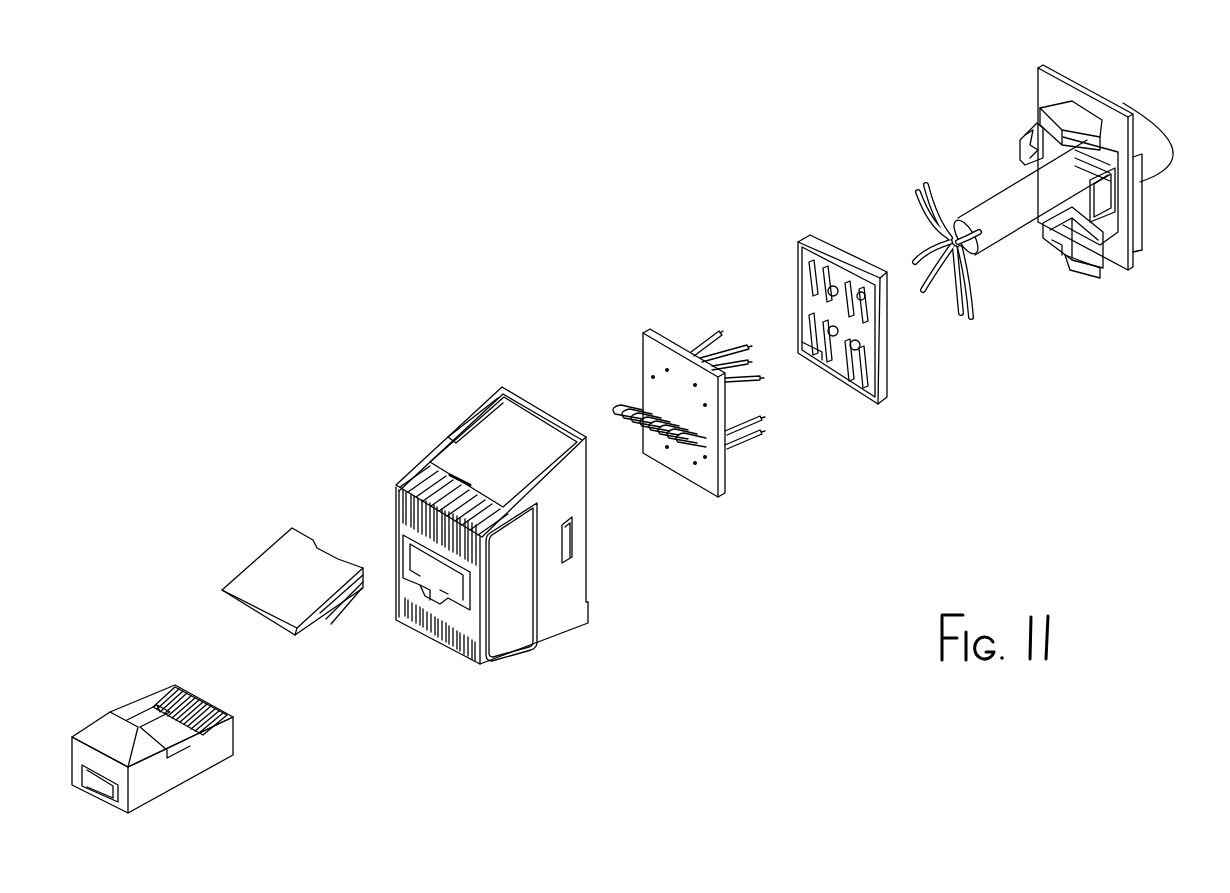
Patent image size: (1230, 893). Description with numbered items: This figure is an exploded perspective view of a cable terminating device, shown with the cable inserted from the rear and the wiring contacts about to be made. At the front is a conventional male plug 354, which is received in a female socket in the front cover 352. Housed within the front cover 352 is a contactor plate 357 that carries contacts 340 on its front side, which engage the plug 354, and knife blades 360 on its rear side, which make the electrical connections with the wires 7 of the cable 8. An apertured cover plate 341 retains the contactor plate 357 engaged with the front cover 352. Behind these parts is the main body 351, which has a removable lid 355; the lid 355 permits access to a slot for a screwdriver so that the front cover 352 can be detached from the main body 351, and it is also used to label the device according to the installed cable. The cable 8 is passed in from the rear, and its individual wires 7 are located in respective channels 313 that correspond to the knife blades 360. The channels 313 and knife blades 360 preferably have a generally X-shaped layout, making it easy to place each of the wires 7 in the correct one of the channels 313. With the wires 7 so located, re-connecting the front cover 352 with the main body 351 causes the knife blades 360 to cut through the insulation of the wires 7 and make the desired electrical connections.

The male plug 354 is at (96, 732).
The removable lid 355 is at (270, 565).
The front cover 352 is at (505, 630).
The contactor plate 357 is at (712, 487).
The knife blades 360 is at (697, 330).
The contacts 340 is at (613, 405).
The apertured cover plate 341 is at (880, 393).
The main body 351 is at (1134, 115).
The cable 8 is at (995, 212).
The wires 7 is at (978, 287).
The channels 313 is at (1018, 123).